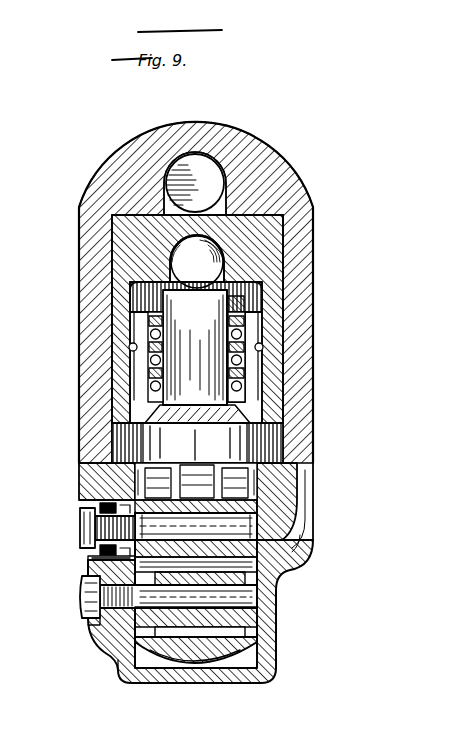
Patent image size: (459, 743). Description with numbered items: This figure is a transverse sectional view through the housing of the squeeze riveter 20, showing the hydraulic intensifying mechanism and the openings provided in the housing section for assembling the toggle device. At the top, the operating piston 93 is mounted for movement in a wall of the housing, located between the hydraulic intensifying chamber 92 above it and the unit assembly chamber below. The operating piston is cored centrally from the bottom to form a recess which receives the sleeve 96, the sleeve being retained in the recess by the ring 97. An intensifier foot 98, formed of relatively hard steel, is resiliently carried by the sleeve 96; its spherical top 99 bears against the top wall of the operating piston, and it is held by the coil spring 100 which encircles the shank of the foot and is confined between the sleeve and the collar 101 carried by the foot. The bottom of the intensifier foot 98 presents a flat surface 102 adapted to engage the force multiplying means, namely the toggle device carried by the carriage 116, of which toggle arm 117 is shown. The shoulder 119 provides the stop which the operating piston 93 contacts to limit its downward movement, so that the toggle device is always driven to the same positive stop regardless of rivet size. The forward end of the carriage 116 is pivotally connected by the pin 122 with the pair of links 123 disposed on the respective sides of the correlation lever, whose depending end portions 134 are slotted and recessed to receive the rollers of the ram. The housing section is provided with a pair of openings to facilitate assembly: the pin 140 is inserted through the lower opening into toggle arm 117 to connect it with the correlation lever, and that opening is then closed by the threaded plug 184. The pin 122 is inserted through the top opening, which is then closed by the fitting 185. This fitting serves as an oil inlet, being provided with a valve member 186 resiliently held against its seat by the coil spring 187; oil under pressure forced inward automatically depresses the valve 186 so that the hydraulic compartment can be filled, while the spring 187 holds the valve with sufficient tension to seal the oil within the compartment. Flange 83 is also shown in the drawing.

The squeeze riveter 20 is at (122, 165).
The hydraulic intensifying chamber 92 is at (217, 164).
The operating piston 93 is at (272, 247).
The spherical top 99 is at (178, 255).
The coil spring 100 is at (132, 320).
The collar 101 is at (236, 303).
The ring 97 is at (115, 347).
The sleeve 96 is at (258, 372).
The intensifier foot 98 is at (170, 380).
The flat surface 102 is at (160, 462).
The shoulder 119 is at (272, 474).
The link 123 is at (160, 500).
The oil inlet fitting 185 is at (76, 512).
The pin 122 is at (246, 520).
The valve member 186 is at (80, 528).
The coil spring 187 is at (90, 556).
The toggle arm 117 is at (284, 578).
The carriage 116 is at (92, 582).
The depending end portion 134 is at (256, 617).
The threaded plug 184 is at (86, 612).
The flange 83 is at (116, 668).
The pin 140 is at (201, 626).